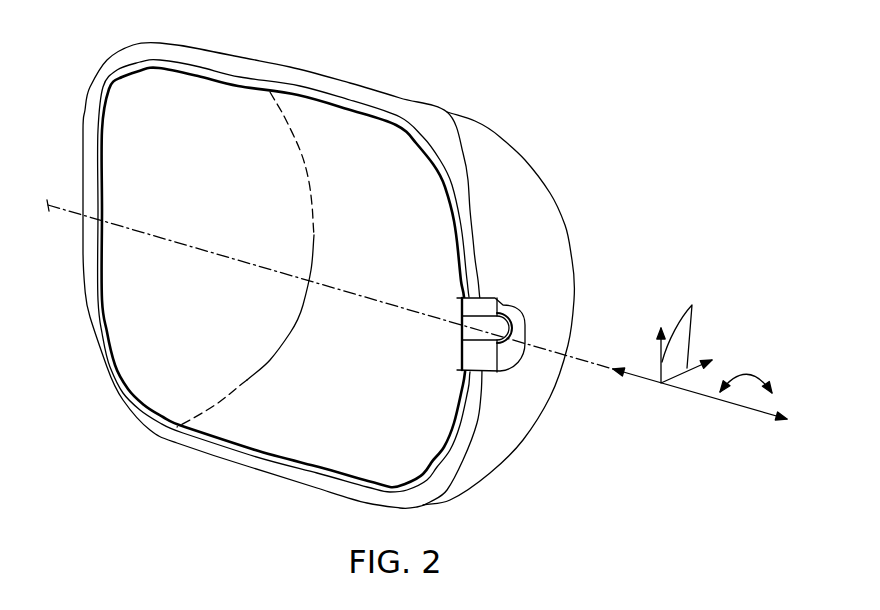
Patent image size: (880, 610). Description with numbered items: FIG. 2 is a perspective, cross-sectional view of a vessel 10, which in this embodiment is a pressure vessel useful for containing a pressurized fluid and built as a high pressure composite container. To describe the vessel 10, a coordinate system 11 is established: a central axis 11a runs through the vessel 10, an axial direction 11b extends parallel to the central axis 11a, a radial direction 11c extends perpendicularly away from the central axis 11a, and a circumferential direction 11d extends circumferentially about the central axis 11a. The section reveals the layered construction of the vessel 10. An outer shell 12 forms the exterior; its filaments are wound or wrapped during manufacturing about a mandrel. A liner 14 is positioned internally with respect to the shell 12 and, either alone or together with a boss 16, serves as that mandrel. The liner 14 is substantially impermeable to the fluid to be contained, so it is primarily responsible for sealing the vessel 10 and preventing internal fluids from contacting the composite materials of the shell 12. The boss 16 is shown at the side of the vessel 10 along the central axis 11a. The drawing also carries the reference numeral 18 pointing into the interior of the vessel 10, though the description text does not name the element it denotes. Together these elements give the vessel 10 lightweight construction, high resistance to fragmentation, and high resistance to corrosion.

The vessel 10 is at (538, 87).
The coordinate system 11 is at (715, 320).
The central axis 11a is at (50, 210).
The axial direction 11b is at (707, 398).
The radial direction 11c is at (687, 322).
The circumferential direction 11d is at (748, 372).
The shell 12 is at (237, 75).
The liner 14 is at (207, 80).
The boss 16 is at (507, 295).
The lens 18 is at (155, 358).